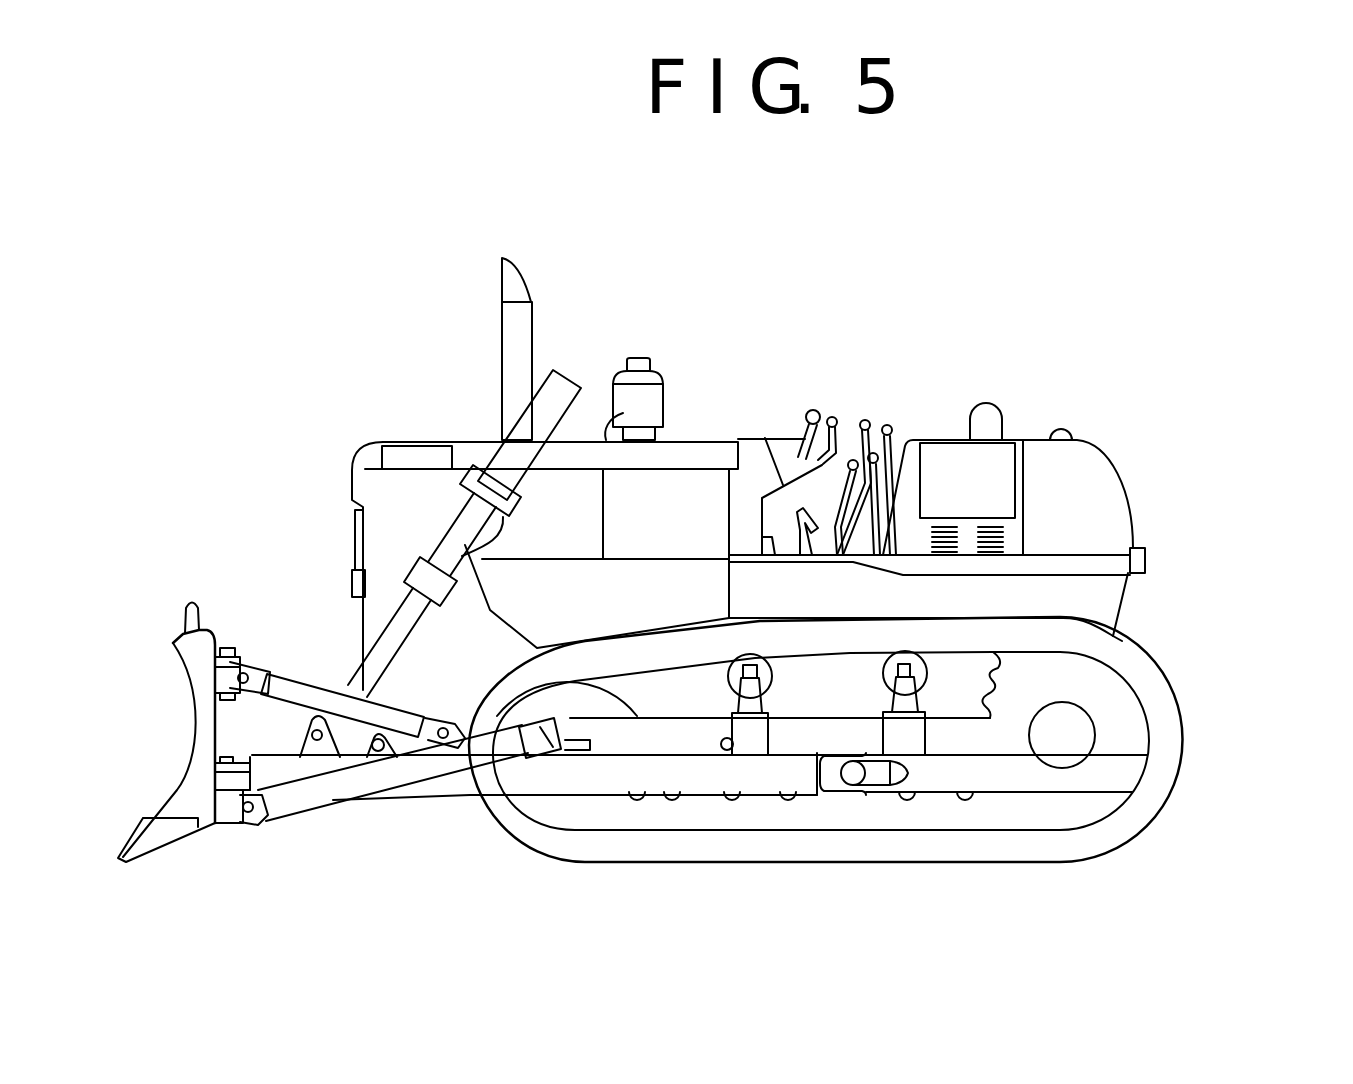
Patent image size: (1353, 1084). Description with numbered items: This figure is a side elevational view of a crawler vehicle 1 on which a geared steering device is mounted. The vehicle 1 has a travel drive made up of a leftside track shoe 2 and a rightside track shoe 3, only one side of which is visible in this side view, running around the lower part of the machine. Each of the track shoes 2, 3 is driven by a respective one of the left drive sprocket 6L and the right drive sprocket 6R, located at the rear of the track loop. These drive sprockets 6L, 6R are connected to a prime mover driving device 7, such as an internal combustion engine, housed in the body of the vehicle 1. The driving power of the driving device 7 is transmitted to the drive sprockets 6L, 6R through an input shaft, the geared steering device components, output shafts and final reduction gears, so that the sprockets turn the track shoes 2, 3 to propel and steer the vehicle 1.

The vehicle 1 is at (895, 353).
The leftside track shoe 2 is at (571, 865).
The rightside track shoe 3 is at (826, 739).
The left drive sprocket 6L is at (1118, 638).
The right drive sprocket 6R is at (1038, 710).
The prime mover driving device 7 is at (352, 458).